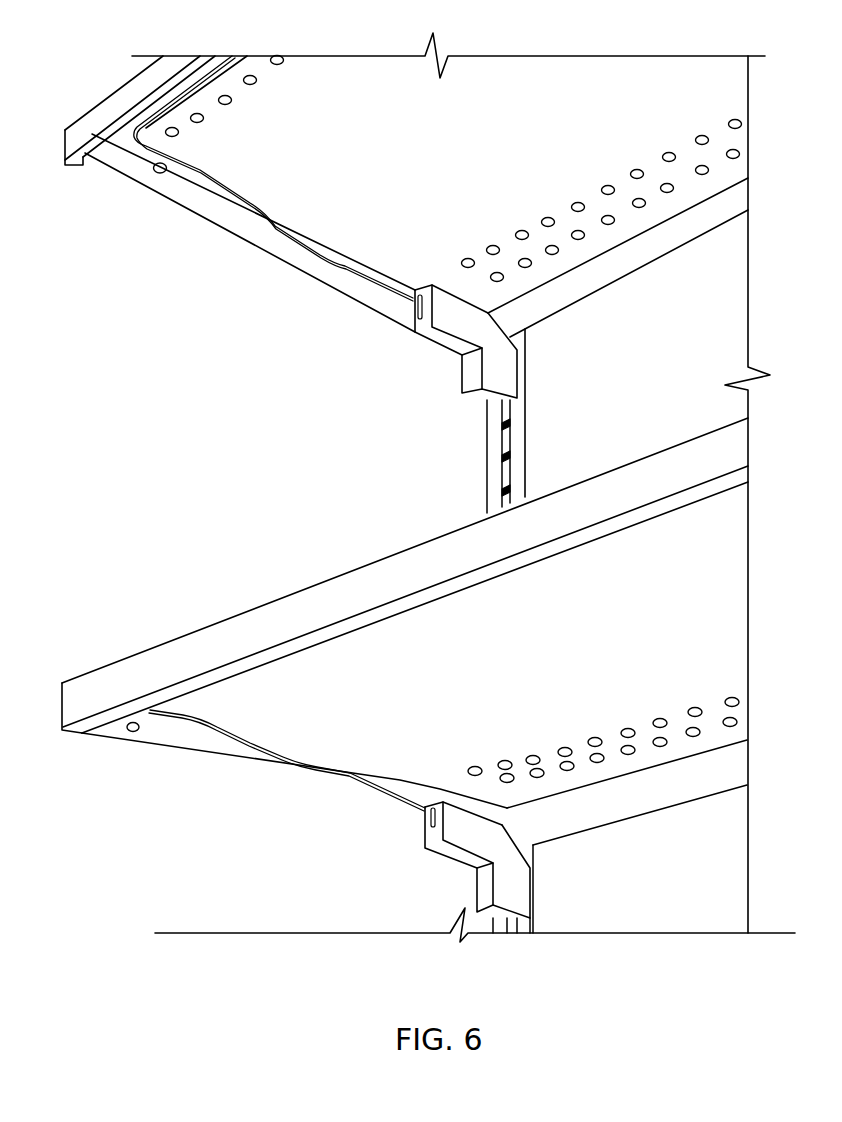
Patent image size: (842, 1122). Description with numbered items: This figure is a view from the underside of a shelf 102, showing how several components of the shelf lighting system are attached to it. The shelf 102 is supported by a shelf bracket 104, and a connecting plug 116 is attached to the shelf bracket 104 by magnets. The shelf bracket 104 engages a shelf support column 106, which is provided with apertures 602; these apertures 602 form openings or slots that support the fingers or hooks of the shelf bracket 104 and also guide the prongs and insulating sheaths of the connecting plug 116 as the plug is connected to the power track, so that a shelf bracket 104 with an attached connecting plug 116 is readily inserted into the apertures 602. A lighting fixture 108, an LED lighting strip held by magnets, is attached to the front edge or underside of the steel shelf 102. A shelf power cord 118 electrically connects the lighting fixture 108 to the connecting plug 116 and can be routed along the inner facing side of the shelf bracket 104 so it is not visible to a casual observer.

The shelf 102 is at (290, 84).
The shelf bracket 104 is at (313, 267).
The shelf support column 106 is at (487, 448).
The lighting fixture 108 is at (148, 122).
The connecting plug 116 is at (477, 329).
The shelf power cord 118 is at (277, 230).
The apertures 602 is at (487, 410).